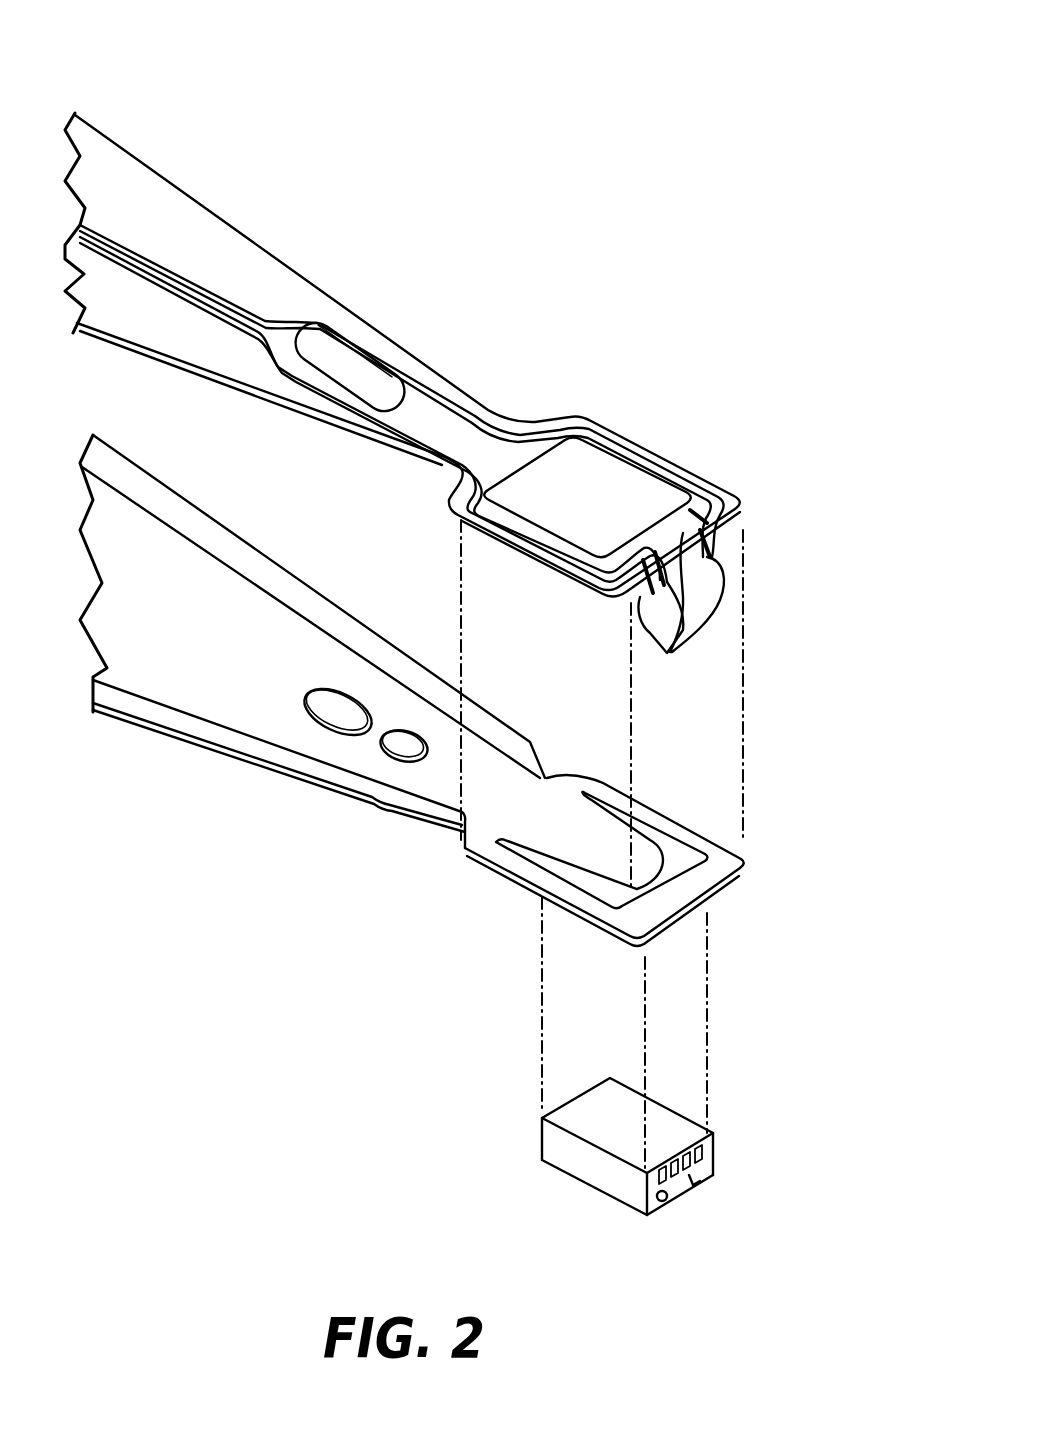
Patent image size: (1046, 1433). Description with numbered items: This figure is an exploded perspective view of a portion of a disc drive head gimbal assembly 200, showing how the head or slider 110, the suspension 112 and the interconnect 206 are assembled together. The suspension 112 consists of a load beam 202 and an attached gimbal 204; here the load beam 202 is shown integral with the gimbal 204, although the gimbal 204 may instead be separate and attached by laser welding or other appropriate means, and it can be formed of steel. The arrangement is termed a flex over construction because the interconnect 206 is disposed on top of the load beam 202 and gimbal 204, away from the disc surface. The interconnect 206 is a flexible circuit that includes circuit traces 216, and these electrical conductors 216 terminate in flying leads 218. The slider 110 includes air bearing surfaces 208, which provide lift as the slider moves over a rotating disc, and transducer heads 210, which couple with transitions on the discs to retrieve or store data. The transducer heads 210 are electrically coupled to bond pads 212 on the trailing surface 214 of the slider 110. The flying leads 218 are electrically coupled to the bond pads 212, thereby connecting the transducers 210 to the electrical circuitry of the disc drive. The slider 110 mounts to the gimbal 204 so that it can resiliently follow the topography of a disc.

The head gimbal assembly 200 is at (595, 95).
The suspension 112 is at (213, 823).
The load beam 202 is at (150, 733).
The gimbal 204 is at (572, 848).
The interconnect 206 is at (385, 334).
The circuit traces 216 is at (196, 282).
The flying leads 218 is at (680, 604).
The slider 110 is at (593, 1161).
The bond pads 212 is at (700, 1157).
The trailing surface 214 is at (717, 1168).
The air bearing surfaces 208 is at (688, 1193).
The transducer heads 210 is at (667, 1199).